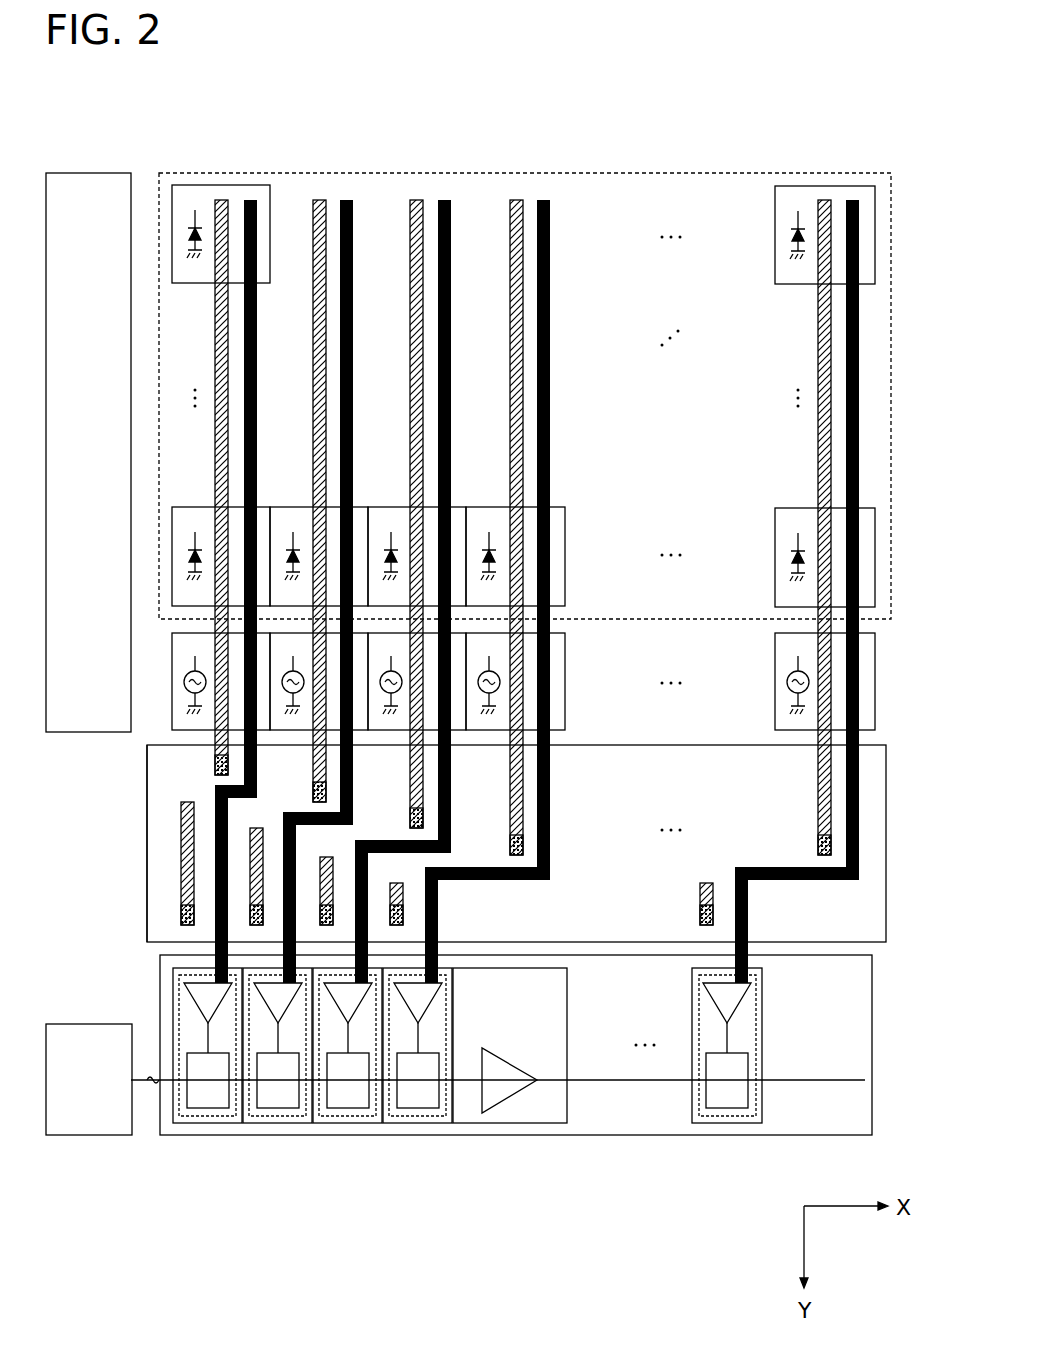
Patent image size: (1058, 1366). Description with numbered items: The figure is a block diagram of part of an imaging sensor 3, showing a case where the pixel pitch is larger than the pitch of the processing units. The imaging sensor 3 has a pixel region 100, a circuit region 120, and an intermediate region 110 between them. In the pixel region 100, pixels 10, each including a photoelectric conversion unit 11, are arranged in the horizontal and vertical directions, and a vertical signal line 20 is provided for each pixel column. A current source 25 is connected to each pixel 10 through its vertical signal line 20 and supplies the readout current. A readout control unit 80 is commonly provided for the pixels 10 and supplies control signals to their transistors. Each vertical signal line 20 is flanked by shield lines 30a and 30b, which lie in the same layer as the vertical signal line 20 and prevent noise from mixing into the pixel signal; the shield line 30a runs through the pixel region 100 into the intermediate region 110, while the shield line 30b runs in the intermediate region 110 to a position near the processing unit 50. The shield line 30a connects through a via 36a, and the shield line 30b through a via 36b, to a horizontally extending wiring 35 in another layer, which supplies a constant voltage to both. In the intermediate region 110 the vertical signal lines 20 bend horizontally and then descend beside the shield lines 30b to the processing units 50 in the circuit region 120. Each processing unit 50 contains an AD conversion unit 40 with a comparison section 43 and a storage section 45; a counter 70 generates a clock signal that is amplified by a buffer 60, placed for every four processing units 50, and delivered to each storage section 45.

The imaging sensor 3 is at (853, 91).
The pixel 10 is at (228, 185).
The photoelectric conversion unit 11 is at (185, 232).
The vertical signal line 20 is at (257, 448).
The current source 25 is at (172, 666).
The shield line 30a is at (218, 445).
The shield line 30b is at (181, 825).
The wiring 35 is at (147, 842).
The via 36a is at (210, 769).
The via 36b is at (178, 915).
The AD conversion unit 40 is at (177, 990).
The comparison section 43 is at (197, 1005).
The storage section 45 is at (222, 1053).
The processing unit 50 is at (210, 1123).
The buffer 60 is at (510, 1123).
The counter 70 is at (80, 1024).
The readout control unit 80 is at (76, 172).
The pixel region 100 is at (920, 168).
The intermediate region 110 is at (920, 735).
The circuit region 120 is at (920, 948).